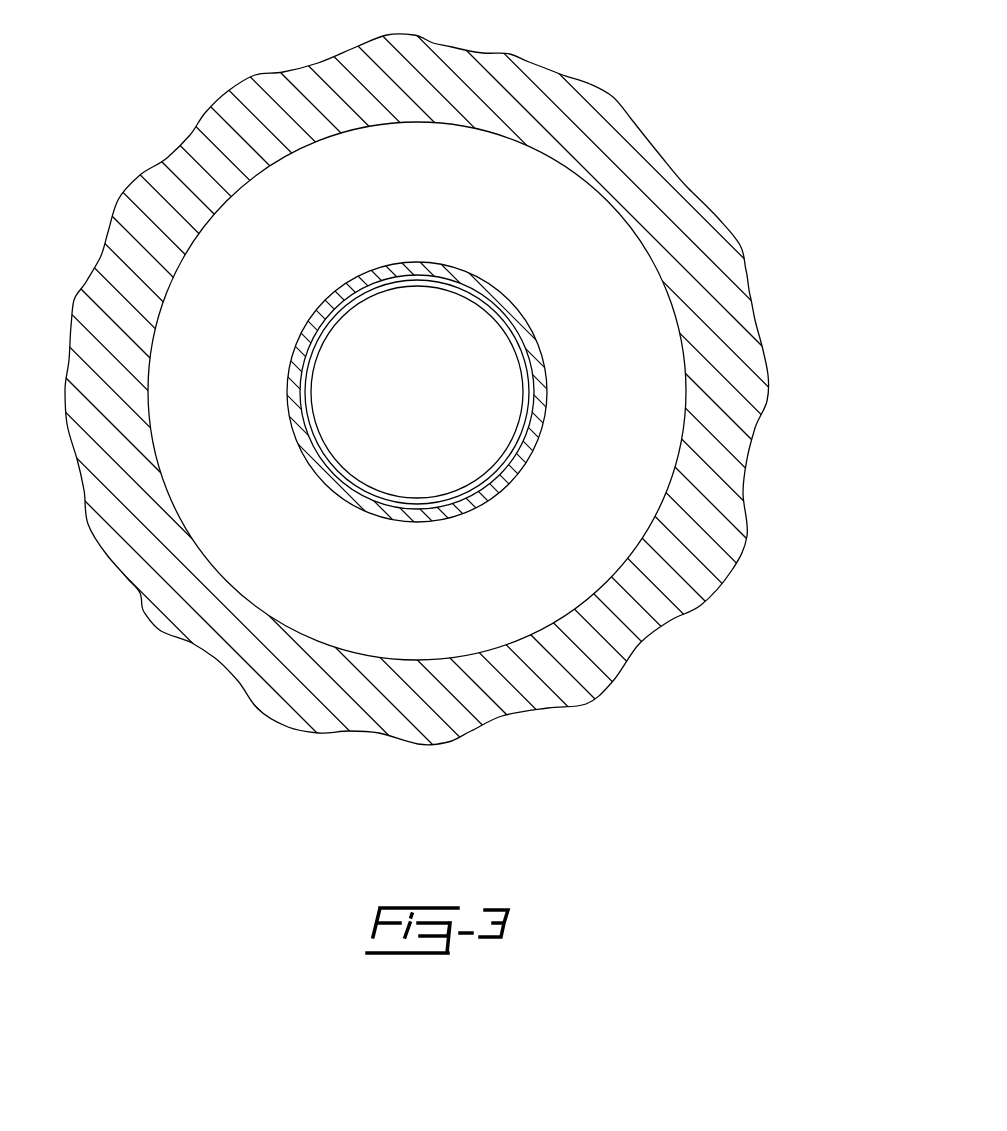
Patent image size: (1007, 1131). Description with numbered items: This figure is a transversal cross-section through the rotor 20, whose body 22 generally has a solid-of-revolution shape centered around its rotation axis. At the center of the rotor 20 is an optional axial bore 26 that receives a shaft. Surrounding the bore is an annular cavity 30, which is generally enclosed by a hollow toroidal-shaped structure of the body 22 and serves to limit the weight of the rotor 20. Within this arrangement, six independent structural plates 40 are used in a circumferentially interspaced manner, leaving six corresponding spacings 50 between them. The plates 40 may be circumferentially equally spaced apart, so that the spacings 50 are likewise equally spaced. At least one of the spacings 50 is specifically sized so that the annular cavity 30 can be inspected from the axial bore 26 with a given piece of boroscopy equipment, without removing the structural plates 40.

The rotor 20 is at (435, 395).
The body 22 is at (620, 130).
The axial bore 26 is at (402, 420).
The annular cavity 30 is at (393, 212).
The structural plates 40 is at (300, 350).
The spacings 50 is at (360, 279).